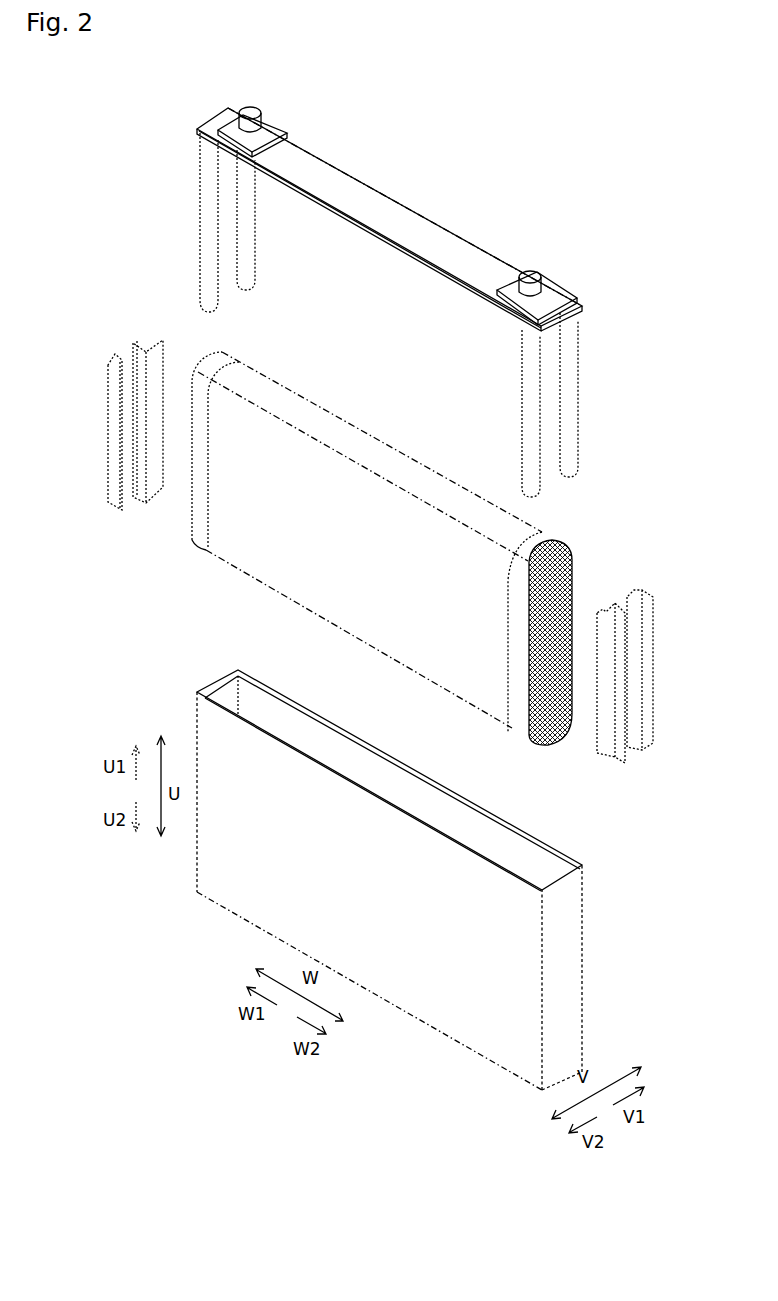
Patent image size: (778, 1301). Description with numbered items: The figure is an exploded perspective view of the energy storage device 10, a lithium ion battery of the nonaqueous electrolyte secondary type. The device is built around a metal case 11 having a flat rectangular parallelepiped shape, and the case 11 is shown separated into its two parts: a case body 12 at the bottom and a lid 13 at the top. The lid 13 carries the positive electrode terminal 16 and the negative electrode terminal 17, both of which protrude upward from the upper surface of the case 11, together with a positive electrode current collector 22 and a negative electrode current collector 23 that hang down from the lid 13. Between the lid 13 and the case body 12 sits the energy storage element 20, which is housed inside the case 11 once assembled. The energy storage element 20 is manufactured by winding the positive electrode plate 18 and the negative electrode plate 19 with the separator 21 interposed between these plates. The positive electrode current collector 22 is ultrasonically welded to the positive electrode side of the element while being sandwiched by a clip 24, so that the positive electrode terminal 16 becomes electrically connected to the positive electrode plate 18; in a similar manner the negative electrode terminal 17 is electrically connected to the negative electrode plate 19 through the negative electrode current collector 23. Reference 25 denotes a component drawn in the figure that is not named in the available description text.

The energy storage device 10 is at (687, 1083).
The case 11 is at (576, 946).
The case body 12 is at (574, 1053).
The lid 13 is at (395, 205).
The positive electrode terminal 16 is at (257, 106).
The negative electrode terminal 17 is at (532, 270).
The positive electrode plate 18 is at (205, 543).
The negative electrode plate 19 is at (522, 712).
The energy storage element 20 is at (408, 574).
The separator 21 is at (295, 588).
The positive electrode current collector 22 is at (250, 248).
The negative electrode current collector 23 is at (572, 397).
The clip 24 is at (112, 380).
The spacer 25 is at (607, 752).